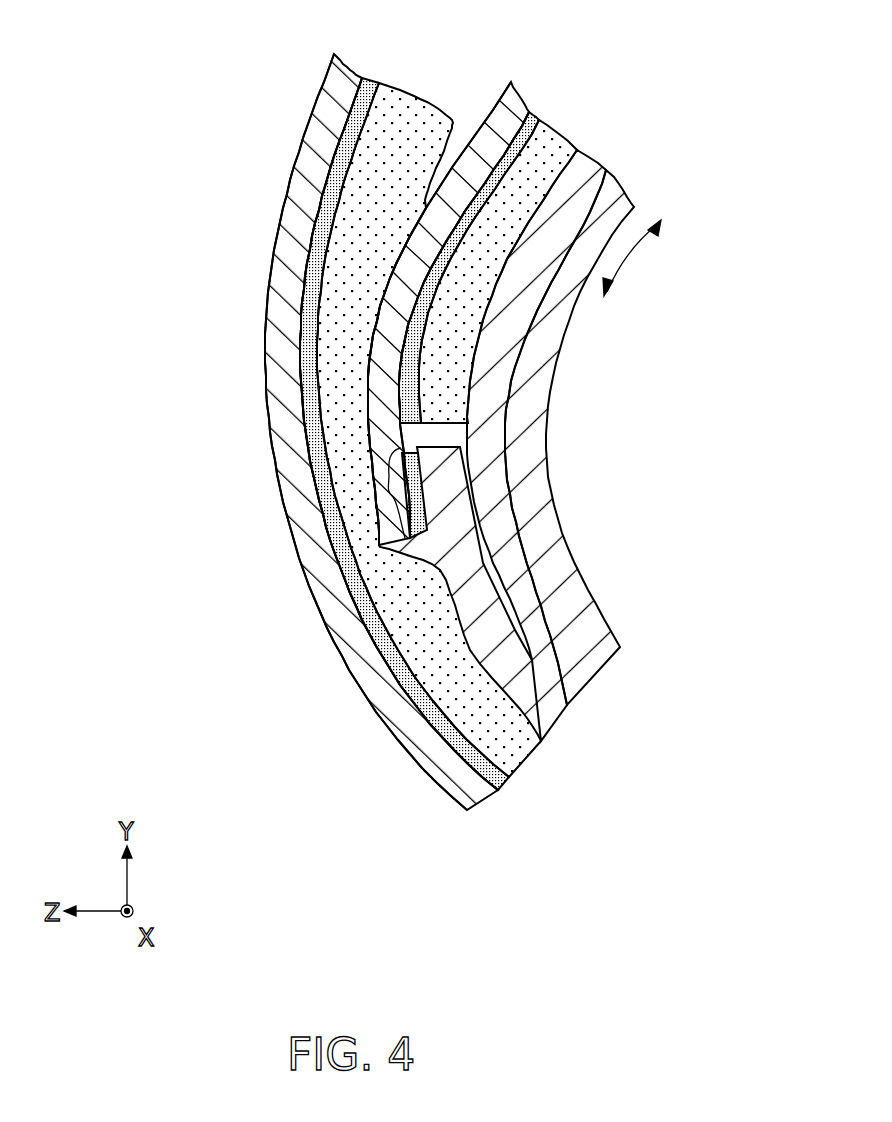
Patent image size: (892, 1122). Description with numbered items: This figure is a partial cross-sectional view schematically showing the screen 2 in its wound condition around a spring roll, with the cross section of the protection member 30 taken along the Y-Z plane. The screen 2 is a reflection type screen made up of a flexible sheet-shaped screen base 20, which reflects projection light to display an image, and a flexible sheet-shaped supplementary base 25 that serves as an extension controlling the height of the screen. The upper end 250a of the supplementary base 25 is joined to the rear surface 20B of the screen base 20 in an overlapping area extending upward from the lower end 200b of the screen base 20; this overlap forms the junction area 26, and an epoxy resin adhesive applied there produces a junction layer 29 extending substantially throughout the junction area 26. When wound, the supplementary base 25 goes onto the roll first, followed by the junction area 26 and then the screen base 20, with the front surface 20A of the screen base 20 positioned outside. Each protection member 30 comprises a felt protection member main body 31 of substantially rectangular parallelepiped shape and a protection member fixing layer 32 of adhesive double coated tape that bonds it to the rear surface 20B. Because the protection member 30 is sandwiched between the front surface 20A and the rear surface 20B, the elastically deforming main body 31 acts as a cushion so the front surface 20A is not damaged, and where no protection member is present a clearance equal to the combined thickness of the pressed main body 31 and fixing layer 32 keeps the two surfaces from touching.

The screen 2 is at (650, 66).
The screen base 20 is at (387, 360).
The front surface 20A is at (376, 513).
The rear surface 20B is at (378, 547).
The junction area 26 is at (393, 455).
The lower end 200b is at (368, 508).
The protection member 30 is at (196, 256).
The protection member main body 31 is at (455, 300).
The protection member fixing layer 32 is at (440, 268).
The supplementary base 25 is at (467, 543).
The junction layer 29 is at (418, 497).
The upper end 250a is at (460, 462).